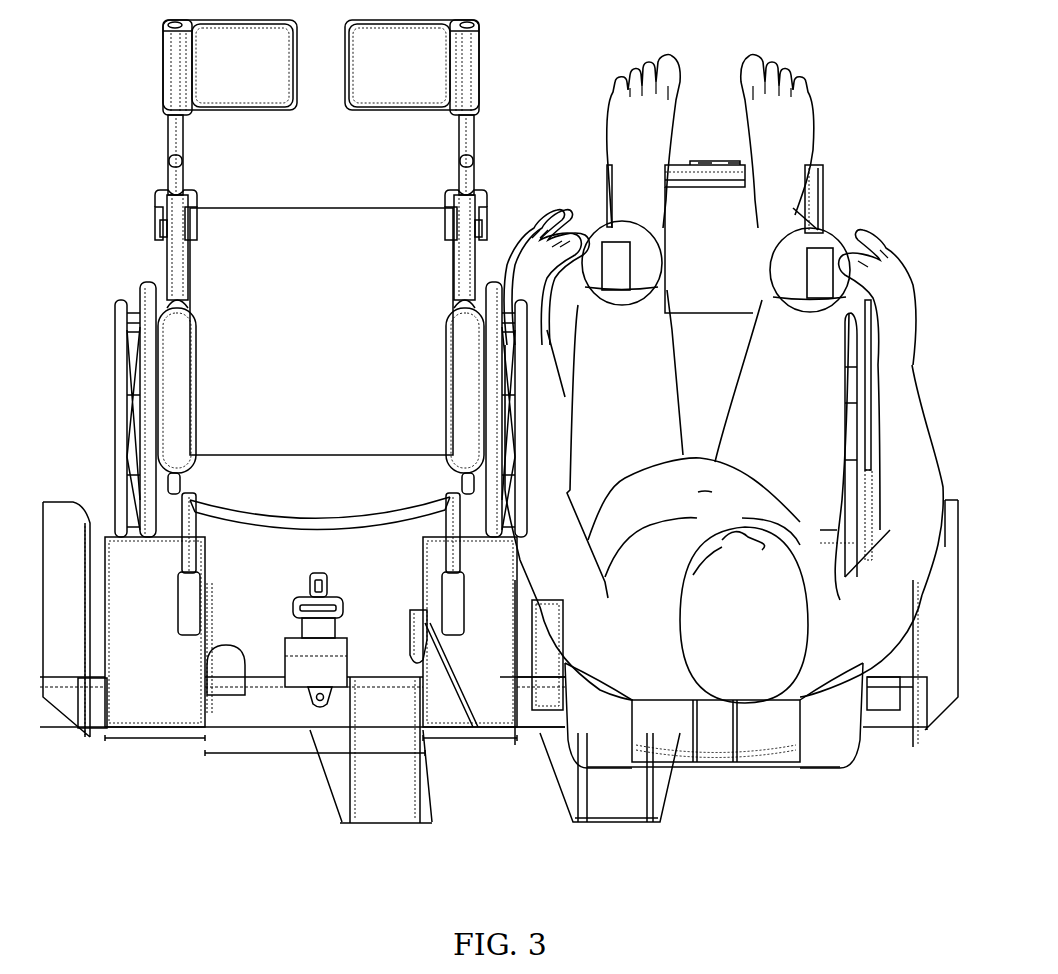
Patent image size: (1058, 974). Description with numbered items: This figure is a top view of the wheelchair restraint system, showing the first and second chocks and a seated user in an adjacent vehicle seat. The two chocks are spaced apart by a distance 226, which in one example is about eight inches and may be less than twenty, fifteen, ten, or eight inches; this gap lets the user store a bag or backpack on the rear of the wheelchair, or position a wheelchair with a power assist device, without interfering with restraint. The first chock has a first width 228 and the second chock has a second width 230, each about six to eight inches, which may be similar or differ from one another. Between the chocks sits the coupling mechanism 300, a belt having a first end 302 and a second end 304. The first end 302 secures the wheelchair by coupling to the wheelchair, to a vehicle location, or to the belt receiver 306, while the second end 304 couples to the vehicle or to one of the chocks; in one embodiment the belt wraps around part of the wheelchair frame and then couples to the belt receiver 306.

The distance 226 is at (297, 756).
The first width 228 is at (462, 741).
The second width 230 is at (155, 741).
The coupling mechanism 300 is at (304, 553).
The first end 302 is at (329, 590).
The second end 304 is at (297, 665).
The belt receiver 306 is at (222, 677).